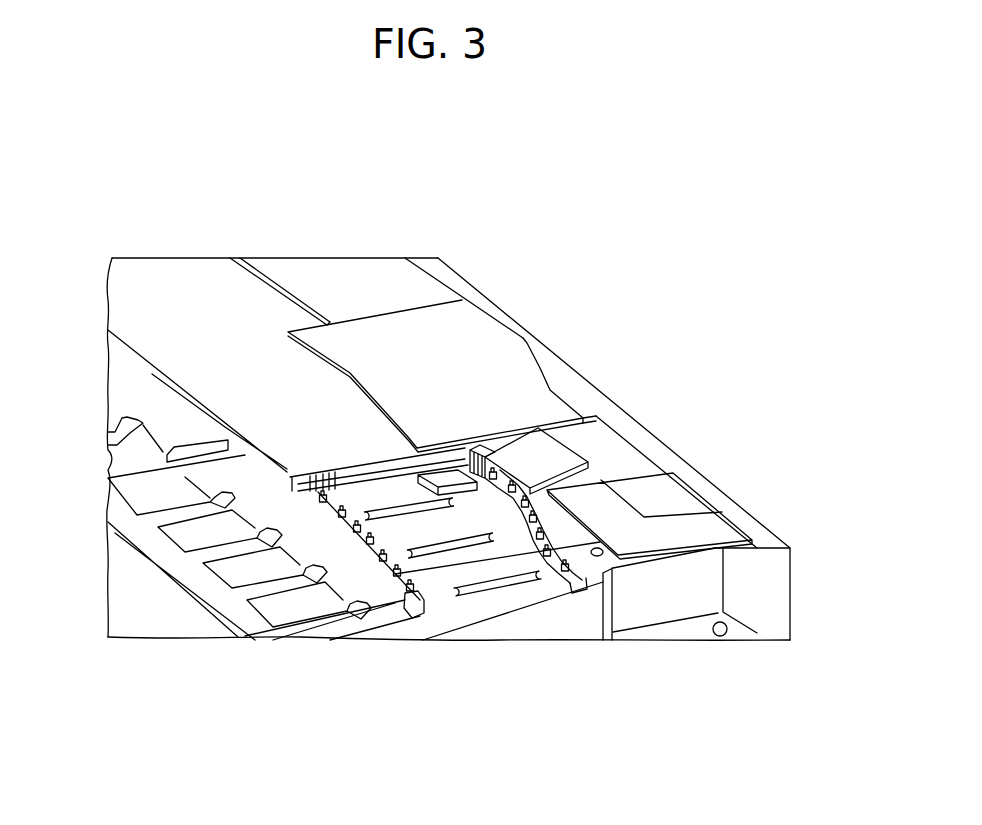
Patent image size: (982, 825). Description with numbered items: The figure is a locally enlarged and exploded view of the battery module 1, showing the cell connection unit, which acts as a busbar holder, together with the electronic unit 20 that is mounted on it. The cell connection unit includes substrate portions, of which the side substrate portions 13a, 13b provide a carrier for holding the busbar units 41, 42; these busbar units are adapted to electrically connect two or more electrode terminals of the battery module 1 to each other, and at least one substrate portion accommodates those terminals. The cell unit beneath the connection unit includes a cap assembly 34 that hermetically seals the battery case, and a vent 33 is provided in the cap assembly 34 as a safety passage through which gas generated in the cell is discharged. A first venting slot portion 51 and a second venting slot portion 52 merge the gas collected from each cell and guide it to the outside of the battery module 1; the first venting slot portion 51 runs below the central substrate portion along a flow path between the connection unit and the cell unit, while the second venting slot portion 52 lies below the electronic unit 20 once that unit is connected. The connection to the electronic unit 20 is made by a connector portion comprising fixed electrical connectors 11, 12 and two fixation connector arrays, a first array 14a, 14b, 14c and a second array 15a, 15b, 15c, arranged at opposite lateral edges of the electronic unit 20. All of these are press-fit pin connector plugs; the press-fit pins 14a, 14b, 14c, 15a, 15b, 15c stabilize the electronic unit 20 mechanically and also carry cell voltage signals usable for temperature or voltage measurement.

The battery module 1 is at (679, 349).
The fixed electrical connector 11 is at (498, 452).
The fixed electrical connector 12 is at (290, 493).
The side substrate portion 13a is at (586, 590).
The side substrate portion 13b is at (420, 618).
The fixation connector 14a is at (323, 503).
The fixation connector 14b is at (344, 518).
The fixation connector 14c is at (412, 592).
The fixation connector 15a is at (590, 468).
The fixation connector 15b is at (518, 550).
The fixation connector 15c is at (645, 566).
The electronic unit 20 is at (466, 338).
The vent 33 is at (535, 587).
The cap assembly 34 is at (490, 583).
The busbar unit 41 is at (590, 461).
The busbar unit 42 is at (350, 580).
The first venting slot portion 51 is at (358, 496).
The second venting slot portion 52 is at (550, 496).